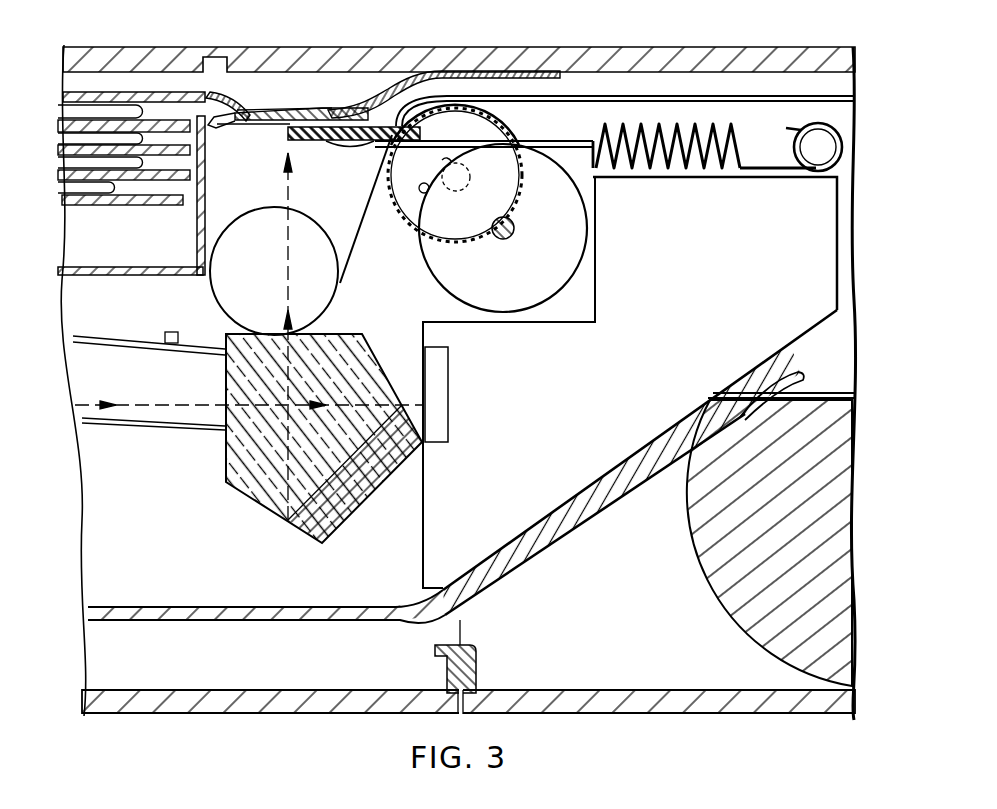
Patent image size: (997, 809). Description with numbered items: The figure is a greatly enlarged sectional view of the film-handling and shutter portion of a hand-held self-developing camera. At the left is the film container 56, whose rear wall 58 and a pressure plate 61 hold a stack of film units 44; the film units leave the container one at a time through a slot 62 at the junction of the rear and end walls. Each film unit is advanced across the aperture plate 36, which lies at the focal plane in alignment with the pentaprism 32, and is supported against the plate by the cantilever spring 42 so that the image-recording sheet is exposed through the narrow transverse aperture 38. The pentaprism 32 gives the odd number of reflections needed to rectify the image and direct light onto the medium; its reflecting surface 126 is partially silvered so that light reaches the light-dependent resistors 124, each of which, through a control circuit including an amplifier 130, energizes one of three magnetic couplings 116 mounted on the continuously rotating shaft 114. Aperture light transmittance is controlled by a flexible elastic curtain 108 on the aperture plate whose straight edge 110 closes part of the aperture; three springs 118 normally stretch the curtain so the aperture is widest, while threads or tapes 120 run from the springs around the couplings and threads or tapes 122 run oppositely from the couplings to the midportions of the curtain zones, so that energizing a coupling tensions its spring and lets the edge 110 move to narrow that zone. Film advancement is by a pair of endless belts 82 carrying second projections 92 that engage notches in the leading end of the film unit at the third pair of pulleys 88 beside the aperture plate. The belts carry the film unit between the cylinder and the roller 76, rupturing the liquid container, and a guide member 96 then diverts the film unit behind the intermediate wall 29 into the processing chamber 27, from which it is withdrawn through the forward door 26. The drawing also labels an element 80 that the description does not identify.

The forward door 26 is at (240, 714).
The processing chamber 27 is at (125, 682).
The intermediate wall 29 is at (190, 607).
The pentaprism 32 is at (236, 478).
The aperture plate 36 is at (240, 114).
The aperture 38 is at (298, 117).
The cantilever spring 42 is at (475, 70).
The film units 44 is at (157, 117).
The container 56 is at (124, 286).
The rear wall 58 is at (113, 90).
The pressure plate 61 is at (103, 200).
The slot 62 is at (227, 97).
The roller 76 is at (713, 602).
The roller 80 is at (262, 262).
The endless belts 82 is at (640, 100).
The third pair of pulleys 88 is at (505, 123).
The second projections 92 is at (152, 336).
The guide member 96 is at (577, 528).
The flexible elastic curtain 108 is at (310, 141).
The straight edge 110 is at (288, 133).
The continuously rotating shaft 114 is at (505, 240).
The magnetic couplings 116 is at (566, 232).
The springs 118 is at (640, 170).
The threads or tapes 120 is at (430, 190).
The threads or tapes 122 is at (414, 153).
The light-dependent resistors 124 is at (440, 398).
The reflecting surface 126 is at (371, 347).
The amplifier 130 is at (535, 463).